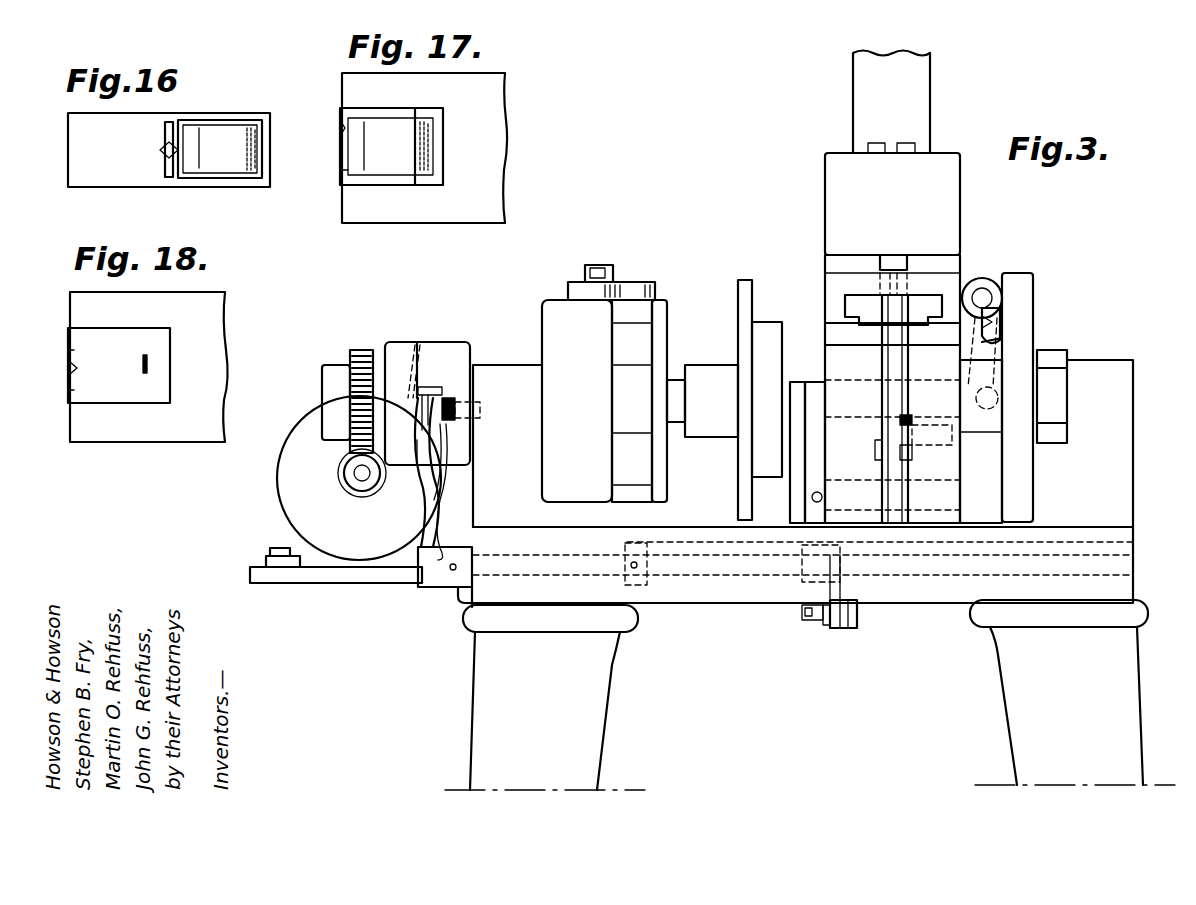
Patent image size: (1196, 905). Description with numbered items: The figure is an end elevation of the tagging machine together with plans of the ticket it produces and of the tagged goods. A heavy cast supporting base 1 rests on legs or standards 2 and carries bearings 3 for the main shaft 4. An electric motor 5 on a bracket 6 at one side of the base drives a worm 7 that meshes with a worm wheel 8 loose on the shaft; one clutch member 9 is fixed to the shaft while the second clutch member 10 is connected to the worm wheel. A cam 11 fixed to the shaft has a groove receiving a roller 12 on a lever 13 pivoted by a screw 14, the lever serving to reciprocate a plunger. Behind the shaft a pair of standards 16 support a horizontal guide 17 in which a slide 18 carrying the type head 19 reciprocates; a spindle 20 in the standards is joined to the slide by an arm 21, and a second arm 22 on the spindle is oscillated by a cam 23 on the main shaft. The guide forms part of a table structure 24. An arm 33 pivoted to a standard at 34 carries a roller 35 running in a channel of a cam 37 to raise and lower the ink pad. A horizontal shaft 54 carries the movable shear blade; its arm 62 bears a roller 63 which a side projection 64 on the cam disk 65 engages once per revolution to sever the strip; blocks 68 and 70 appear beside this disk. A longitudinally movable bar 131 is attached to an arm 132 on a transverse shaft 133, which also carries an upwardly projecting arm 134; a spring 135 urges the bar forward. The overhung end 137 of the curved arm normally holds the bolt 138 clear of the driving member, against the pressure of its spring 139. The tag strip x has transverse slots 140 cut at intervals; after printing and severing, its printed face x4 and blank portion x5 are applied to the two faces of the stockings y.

In FIG. 3, the supporting base 1 is at (1135, 540).
In FIG. 3, the legs or standards 2 is at (488, 684).
In FIG. 3, the bearings 3 is at (505, 365).
In FIG. 3, the main shaft 4 is at (675, 425).
In FIG. 3, the electric motor 5 is at (302, 425).
In FIG. 3, the bracket 6 is at (360, 586).
In FIG. 3, the worm 7 is at (342, 473).
In FIG. 3, the worm wheel 8 is at (362, 350).
In FIG. 3, the clutch member 9 is at (450, 342).
In FIG. 3, the second clutch member 10 is at (400, 342).
In FIG. 3, the cam 11 is at (558, 303).
In FIG. 3, the roller 12 is at (640, 312).
In FIG. 3, the lever 13 is at (640, 282).
In FIG. 3, the screw 14 is at (598, 266).
In FIG. 3, the standards 16 is at (966, 462).
In FIG. 3, the guide 17 is at (848, 303).
In FIG. 3, the slide 18 is at (834, 282).
In FIG. 3, the type carrying head 19 is at (892, 204).
In FIG. 3, the spindle 20 is at (950, 500).
In FIG. 3, the arm 21 is at (895, 255).
In FIG. 3, the second arm 22 is at (816, 452).
In FIG. 3, the cam 23 is at (775, 322).
In FIG. 3, the table structure 24 is at (836, 333).
In FIG. 3, the arm 33 is at (905, 418).
In FIG. 3, the pivot 34 is at (915, 440).
In FIG. 3, the roller 35 is at (905, 462).
In FIG. 3, the cam 37 is at (880, 456).
In FIG. 3, the horizontal shaft 54 is at (983, 296).
In FIG. 3, the arm 62 is at (980, 343).
In FIG. 3, the roller 63 is at (983, 373).
In FIG. 3, the side projection 64 is at (990, 322).
In FIG. 3, the cam disk 65 is at (1030, 282).
In FIG. 3, the block 68 is at (1068, 348).
In FIG. 3, the block 70 is at (1052, 393).
In FIG. 3, the longitudinally movable bar 131 is at (848, 630).
In FIG. 3, the arm 132 is at (829, 628).
In FIG. 3, the shaft 133 is at (745, 575).
In FIG. 3, the arm 134 is at (416, 502).
In FIG. 3, the spring 135 is at (806, 622).
In FIG. 3, the overhung end 137 is at (436, 388).
In FIG. 3, the tooth or bolt 138 is at (449, 432).
In FIG. 3, the spring 139 is at (456, 402).
In FIG. 16, the transverse slots 140 is at (174, 178).
In FIG. 3, the strip x is at (870, 88).
In FIG. 16, the tag printed face x4 is at (268, 108).
In FIG. 17, the tag printed face x4 is at (384, 186).
In FIG. 16, the blank portion x5 is at (170, 192).
In FIG. 18, the blank portion x5 is at (123, 328).
In FIG. 17, the stockings y is at (487, 150).
In FIG. 18, the stockings y is at (218, 352).